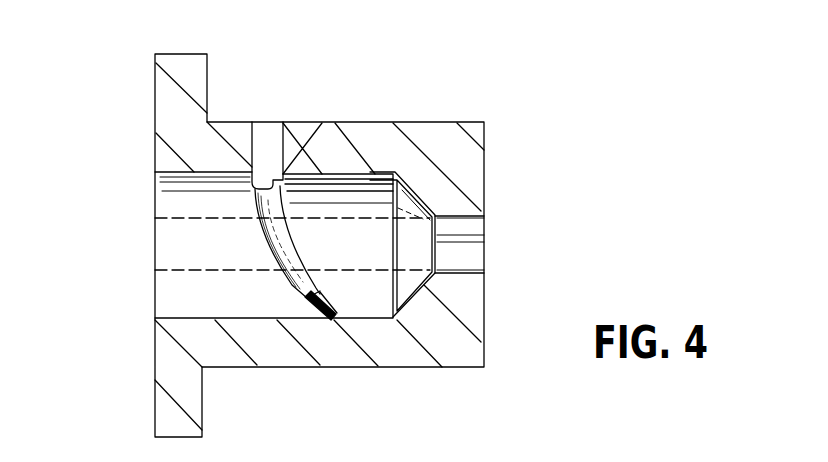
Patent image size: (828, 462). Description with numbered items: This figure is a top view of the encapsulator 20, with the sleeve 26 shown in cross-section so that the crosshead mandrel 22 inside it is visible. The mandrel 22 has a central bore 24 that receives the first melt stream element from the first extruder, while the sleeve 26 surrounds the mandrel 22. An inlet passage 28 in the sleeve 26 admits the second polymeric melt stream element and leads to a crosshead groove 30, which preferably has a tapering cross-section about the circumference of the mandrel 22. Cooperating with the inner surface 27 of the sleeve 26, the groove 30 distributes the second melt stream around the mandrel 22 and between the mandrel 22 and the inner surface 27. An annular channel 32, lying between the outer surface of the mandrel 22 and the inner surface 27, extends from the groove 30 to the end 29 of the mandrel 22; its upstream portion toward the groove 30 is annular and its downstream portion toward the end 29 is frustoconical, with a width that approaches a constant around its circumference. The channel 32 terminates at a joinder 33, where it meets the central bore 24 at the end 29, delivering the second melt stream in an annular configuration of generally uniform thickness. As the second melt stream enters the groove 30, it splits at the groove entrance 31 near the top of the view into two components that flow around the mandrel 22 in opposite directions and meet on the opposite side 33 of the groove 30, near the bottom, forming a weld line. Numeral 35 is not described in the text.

The encapsulator 20 is at (299, 245).
The crosshead mandrel 22 is at (160, 192).
The central bore 24 is at (153, 270).
The sleeve 26 is at (453, 122).
The inner surface 27 is at (333, 175).
The inlet passage 28 is at (280, 178).
The end of mandrel 29 is at (437, 262).
The crosshead groove 30 is at (298, 293).
The groove entrance 31 is at (325, 175).
The annular channel 32 is at (372, 175).
The joinder 33 is at (432, 280).
The outlet thread 35 is at (467, 218).